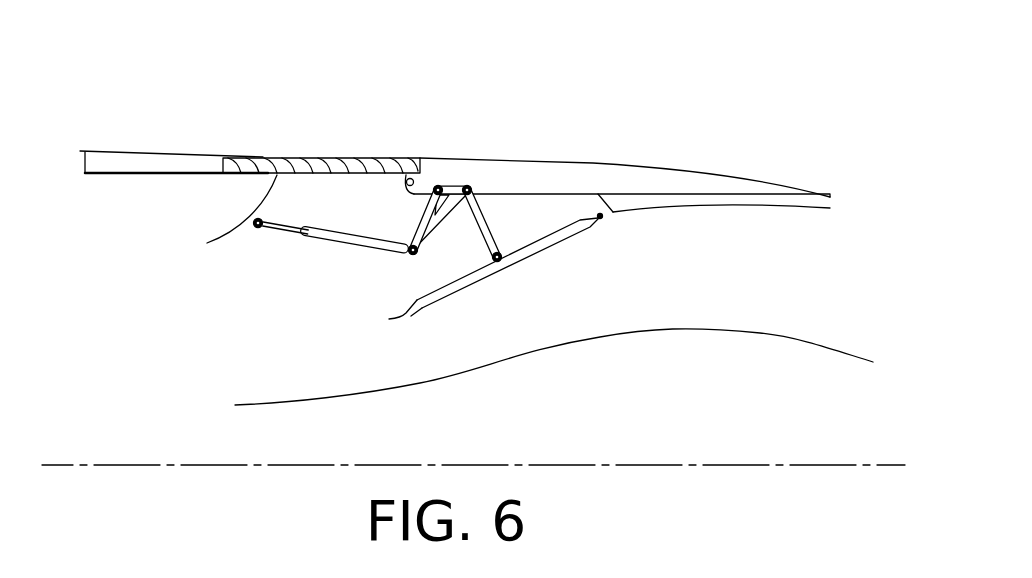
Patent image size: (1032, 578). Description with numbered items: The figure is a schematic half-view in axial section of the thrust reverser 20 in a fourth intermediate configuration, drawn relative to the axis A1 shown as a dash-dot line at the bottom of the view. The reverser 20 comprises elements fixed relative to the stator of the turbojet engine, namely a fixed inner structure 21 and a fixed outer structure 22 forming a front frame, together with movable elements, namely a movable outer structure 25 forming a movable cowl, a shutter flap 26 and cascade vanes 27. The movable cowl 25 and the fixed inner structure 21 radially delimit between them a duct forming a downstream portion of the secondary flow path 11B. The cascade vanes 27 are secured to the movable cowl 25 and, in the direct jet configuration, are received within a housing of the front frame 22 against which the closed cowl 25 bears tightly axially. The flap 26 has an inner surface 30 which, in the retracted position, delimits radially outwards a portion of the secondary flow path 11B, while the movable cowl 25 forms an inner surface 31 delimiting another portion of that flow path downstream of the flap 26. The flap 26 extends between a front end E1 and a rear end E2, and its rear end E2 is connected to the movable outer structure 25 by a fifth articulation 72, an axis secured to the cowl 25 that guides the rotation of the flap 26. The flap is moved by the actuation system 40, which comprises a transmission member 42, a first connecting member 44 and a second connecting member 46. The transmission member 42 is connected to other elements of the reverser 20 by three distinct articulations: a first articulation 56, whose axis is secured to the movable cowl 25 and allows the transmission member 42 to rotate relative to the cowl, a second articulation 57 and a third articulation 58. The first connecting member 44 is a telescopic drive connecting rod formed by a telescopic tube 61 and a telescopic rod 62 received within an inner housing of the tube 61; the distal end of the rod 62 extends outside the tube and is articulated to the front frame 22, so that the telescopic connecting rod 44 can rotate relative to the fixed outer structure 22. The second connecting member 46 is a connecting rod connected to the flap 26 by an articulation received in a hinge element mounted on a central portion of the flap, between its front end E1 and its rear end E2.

The thrust reverser 20 is at (427, 102).
The fixed inner structure 21 is at (803, 343).
The fixed outer structure 22 is at (95, 150).
The movable outer structure 25 is at (592, 162).
The shutter flap 26 is at (545, 250).
The cascade vanes 27 is at (307, 158).
The inner surface of the flap 30 is at (479, 285).
The inner surface of the movable cowl 31 is at (657, 214).
The actuation system 40 is at (500, 180).
The transmission member 42 is at (417, 207).
The first connecting member 44 is at (338, 293).
The second connecting member 46 is at (490, 232).
The first articulation 56 is at (437, 186).
The second articulation 57 is at (416, 258).
The third articulation 58 is at (467, 188).
The telescopic tube 61 is at (350, 241).
The telescopic rod 62 is at (285, 234).
The fifth articulation 72 is at (604, 218).
The secondary flow path 11B is at (293, 373).
The engine axis A1 is at (57, 465).
The front end of the flap E1 is at (413, 319).
The rear end of the flap E2 is at (589, 231).